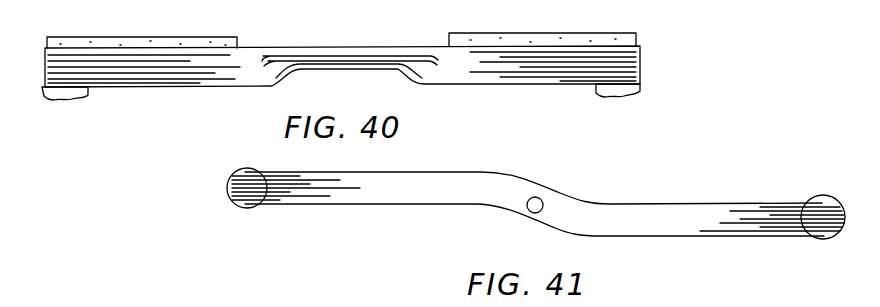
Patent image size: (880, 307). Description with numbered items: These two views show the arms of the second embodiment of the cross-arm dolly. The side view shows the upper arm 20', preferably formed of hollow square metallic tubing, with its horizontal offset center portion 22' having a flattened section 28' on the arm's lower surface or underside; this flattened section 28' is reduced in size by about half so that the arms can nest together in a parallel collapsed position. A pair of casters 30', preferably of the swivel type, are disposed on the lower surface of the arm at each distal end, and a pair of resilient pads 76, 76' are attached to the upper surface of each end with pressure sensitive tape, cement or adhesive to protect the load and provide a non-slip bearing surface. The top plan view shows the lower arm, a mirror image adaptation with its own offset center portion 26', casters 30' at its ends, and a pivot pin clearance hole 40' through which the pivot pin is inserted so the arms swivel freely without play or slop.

In FIG. 40, the upper arm 20' is at (342, 105).
In FIG. 41, the upper arm horizontal offset center portion 22' is at (538, 187).
In FIG. 41, the lower arm horizontal offset center portion 26' is at (545, 168).
In FIG. 40, the flattened section 28' is at (387, 108).
In FIG. 40, the caster 30' is at (367, 124).
In FIG. 41, the caster 30' is at (503, 236).
In FIG. 41, the pivot pin clearance hole 40' is at (483, 230).
In FIG. 40, the pad 76 is at (183, 24).
In FIG. 40, the resilient pad 76' is at (596, 39).